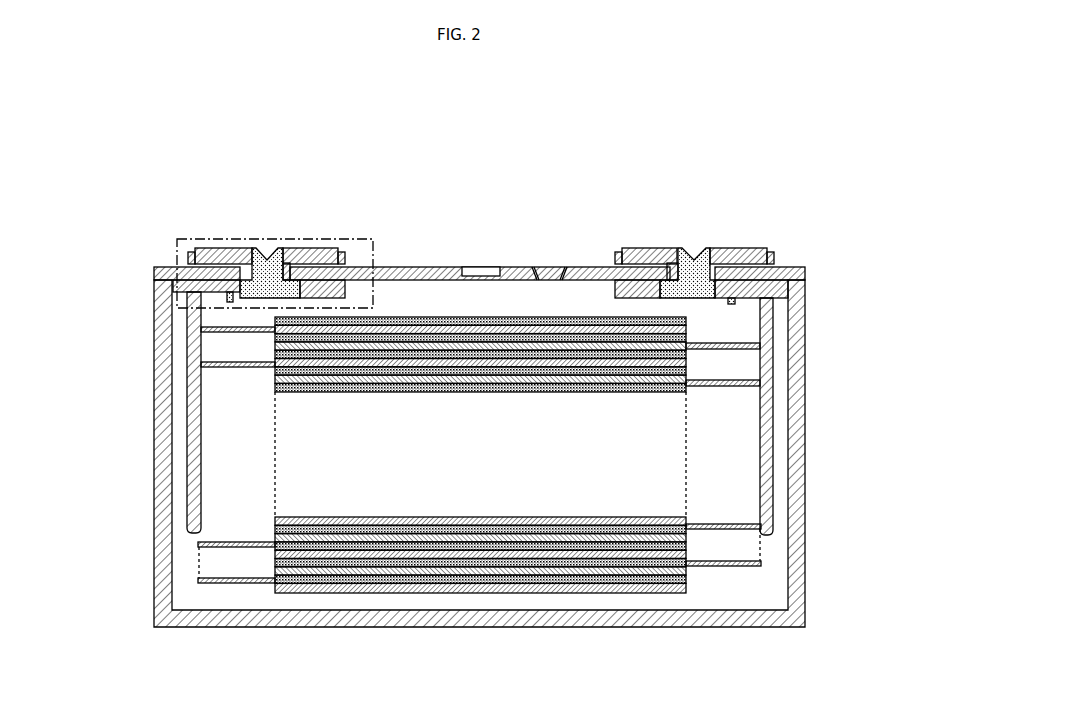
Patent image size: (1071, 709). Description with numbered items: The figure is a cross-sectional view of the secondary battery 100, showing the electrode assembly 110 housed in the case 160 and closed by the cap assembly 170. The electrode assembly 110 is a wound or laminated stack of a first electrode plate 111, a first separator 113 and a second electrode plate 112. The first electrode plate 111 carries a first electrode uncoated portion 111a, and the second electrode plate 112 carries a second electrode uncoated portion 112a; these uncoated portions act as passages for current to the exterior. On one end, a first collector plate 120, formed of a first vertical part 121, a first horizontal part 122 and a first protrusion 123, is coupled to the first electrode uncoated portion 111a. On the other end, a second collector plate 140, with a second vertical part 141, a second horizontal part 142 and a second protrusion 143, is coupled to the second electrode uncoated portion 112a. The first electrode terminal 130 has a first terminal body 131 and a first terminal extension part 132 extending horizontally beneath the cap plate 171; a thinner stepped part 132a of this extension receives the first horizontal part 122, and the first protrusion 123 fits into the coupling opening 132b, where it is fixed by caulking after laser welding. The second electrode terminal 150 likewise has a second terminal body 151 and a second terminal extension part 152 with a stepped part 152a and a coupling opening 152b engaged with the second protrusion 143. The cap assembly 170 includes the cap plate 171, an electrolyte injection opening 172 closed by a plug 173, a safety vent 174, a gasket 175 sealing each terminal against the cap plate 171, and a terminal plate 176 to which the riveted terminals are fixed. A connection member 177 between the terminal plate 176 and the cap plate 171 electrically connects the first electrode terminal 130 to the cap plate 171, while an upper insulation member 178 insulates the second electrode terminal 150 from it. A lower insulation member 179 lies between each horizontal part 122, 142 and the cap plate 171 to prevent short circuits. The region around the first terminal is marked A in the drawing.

The secondary battery 100 is at (834, 142).
The electrode assembly 110 is at (479, 496).
The first electrode plate 111 is at (325, 594).
The first electrode uncoated portion 111a is at (250, 584).
The second electrode plate 112 is at (617, 594).
The second electrode uncoated portion 112a is at (722, 567).
The first separator 113 is at (408, 596).
The first collector plate 120 is at (98, 285).
The first vertical part 121 is at (188, 346).
The first horizontal part 122 is at (170, 289).
The first protrusion 123 is at (230, 305).
The first electrode terminal 130 is at (222, 186).
The first terminal body 131 is at (252, 247).
The first terminal extension part 132 is at (218, 247).
The stepped part 132a is at (155, 271).
The coupling opening 132b is at (186, 262).
The second collector plate 140 is at (868, 288).
The second vertical part 141 is at (775, 347).
The second horizontal part 142 is at (790, 292).
The second protrusion 143 is at (733, 305).
The second electrode terminal 150 is at (800, 186).
The second terminal body 151 is at (710, 248).
The second terminal extension part 152 is at (747, 248).
The stepped part 152a is at (806, 273).
The coupling opening 152b is at (772, 262).
The case 160 is at (803, 448).
The cap assembly 170 is at (440, 267).
The cap plate 171 is at (397, 266).
The electrolyte injection opening 172 is at (534, 266).
The plug 173 is at (563, 267).
The safety vent 174 is at (480, 267).
The gasket 175 is at (284, 262).
The terminal plate 176 is at (305, 247).
The connection member 177 is at (343, 252).
The upper insulation member 178 is at (618, 250).
The lower insulation member 179 is at (340, 290).
The enlarged region A is at (176, 240).